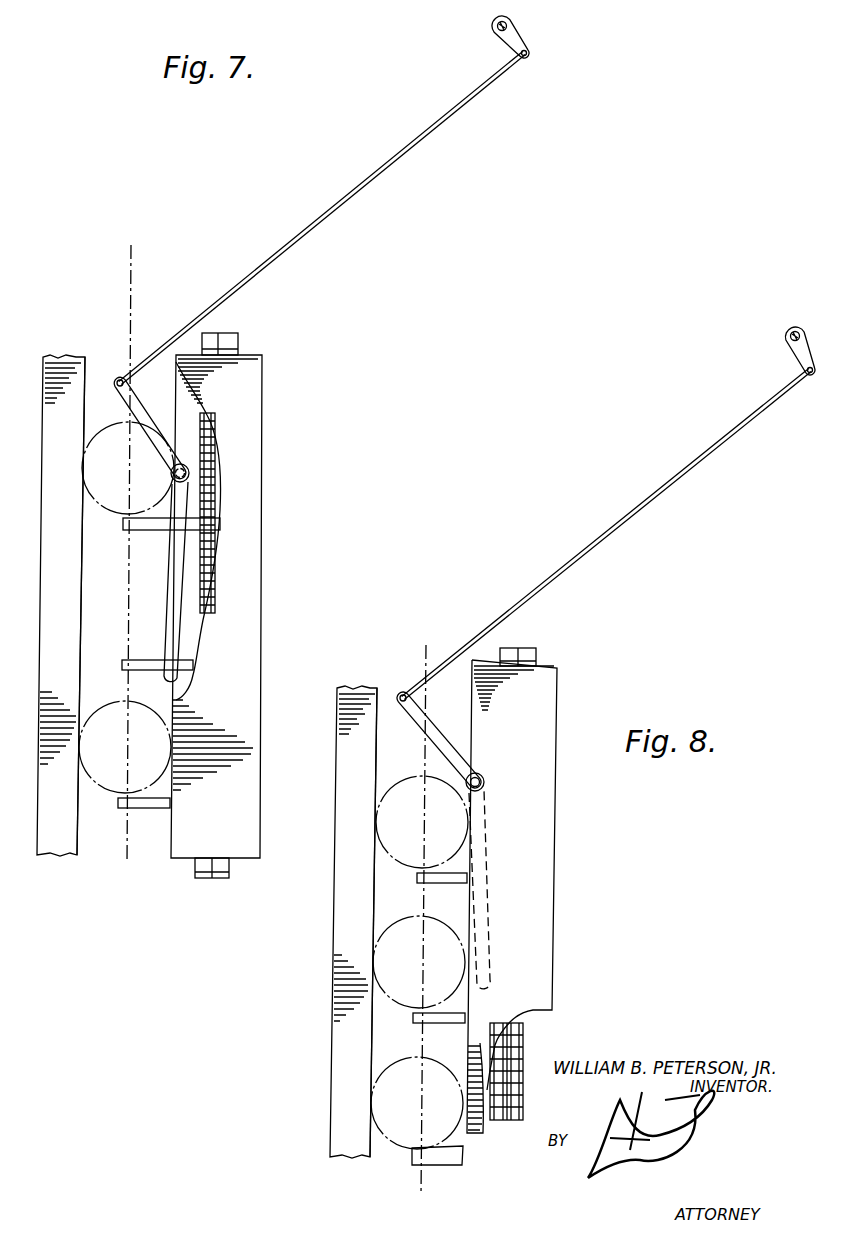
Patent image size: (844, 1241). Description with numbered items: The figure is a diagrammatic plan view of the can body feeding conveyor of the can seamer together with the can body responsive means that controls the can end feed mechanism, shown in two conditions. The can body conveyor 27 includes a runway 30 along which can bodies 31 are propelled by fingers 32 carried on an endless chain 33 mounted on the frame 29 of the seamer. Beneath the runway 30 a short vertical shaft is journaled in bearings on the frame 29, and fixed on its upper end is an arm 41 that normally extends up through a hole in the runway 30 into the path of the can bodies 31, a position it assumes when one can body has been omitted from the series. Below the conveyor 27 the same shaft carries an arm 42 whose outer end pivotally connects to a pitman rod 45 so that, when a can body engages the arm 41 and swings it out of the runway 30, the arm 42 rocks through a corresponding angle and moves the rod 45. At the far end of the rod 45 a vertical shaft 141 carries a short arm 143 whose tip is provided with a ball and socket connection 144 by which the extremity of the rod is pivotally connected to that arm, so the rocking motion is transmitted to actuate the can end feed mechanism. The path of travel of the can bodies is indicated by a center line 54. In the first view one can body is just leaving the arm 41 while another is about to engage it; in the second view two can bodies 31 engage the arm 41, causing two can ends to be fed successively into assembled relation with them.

In FIG. 7, the can body conveyor 27 is at (62, 852).
In FIG. 8, the can body conveyor 27 is at (338, 1104).
In FIG. 7, the frame 29 is at (252, 492).
In FIG. 8, the frame 29 is at (545, 925).
In FIG. 7, the runway 30 is at (80, 612).
In FIG. 8, the runway 30 is at (374, 1004).
In FIG. 7, the can bodies 31 is at (112, 508).
In FIG. 8, the can bodies 31 is at (400, 866).
In FIG. 7, the fingers 32 is at (150, 530).
In FIG. 8, the fingers 32 is at (446, 884).
In FIG. 7, the endless chain 33 is at (230, 872).
In FIG. 8, the endless chain 33 is at (526, 1040).
In FIG. 7, the arm 41 is at (164, 641).
In FIG. 8, the arm 41 is at (480, 900).
In FIG. 7, the arm 42 is at (142, 411).
In FIG. 8, the arm 42 is at (436, 731).
In FIG. 7, the connecting rod 45 is at (330, 203).
In FIG. 8, the connecting rod 45 is at (602, 528).
In FIG. 7, the centerline axis 54 is at (121, 840).
In FIG. 8, the centerline axis 54 is at (415, 1050).
In FIG. 7, the vertical shaft 141 is at (495, 30).
In FIG. 8, the vertical shaft 141 is at (788, 338).
In FIG. 7, the short arm 143 is at (516, 35).
In FIG. 8, the short arm 143 is at (800, 354).
In FIG. 7, the ball and socket connection 144 is at (528, 57).
In FIG. 8, the ball and socket connection 144 is at (812, 376).